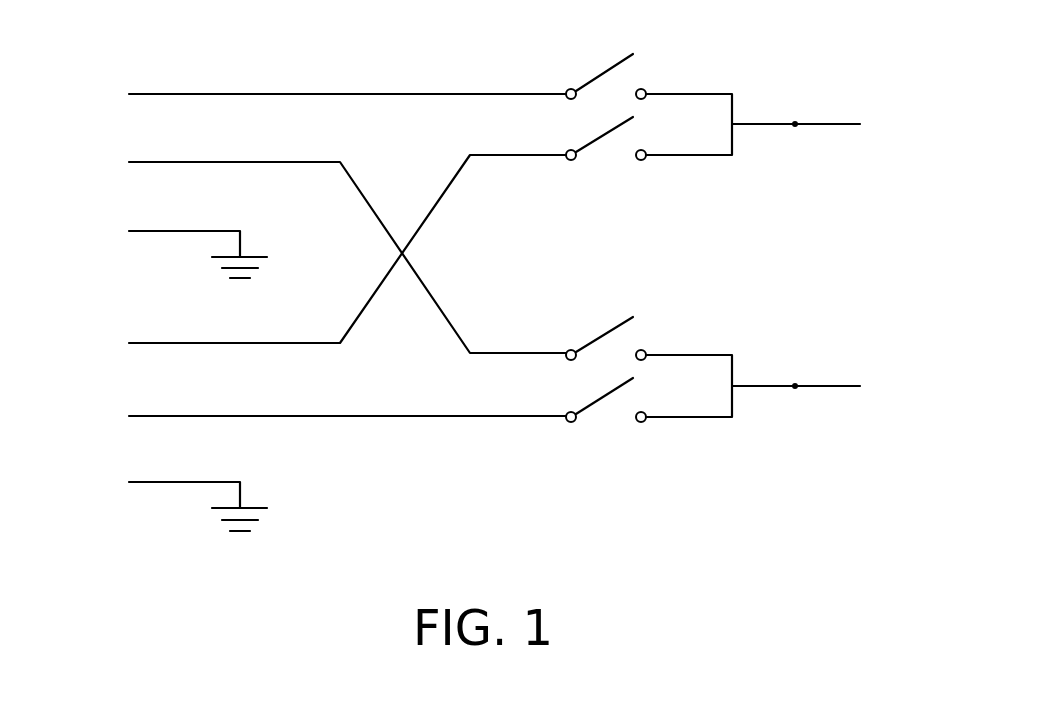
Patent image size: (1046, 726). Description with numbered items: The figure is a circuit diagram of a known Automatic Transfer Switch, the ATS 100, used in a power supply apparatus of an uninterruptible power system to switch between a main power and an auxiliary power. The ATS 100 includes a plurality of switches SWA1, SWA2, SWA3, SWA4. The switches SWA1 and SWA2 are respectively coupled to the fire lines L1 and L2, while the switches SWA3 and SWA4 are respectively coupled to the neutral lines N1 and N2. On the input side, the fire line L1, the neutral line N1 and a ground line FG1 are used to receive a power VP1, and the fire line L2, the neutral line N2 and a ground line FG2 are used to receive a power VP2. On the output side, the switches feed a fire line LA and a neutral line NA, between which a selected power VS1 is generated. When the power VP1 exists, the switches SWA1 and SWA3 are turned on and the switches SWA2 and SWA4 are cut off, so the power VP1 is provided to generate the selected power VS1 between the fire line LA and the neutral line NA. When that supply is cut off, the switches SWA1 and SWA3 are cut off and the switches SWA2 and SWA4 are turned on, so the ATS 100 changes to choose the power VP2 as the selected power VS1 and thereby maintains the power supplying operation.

The fire line L1 is at (183, 94).
The neutral line N1 is at (178, 163).
The fire line L2 is at (183, 343).
The neutral line N2 is at (178, 417).
The power VP1 is at (92, 127).
The power VP2 is at (95, 379).
The ground line FG1 is at (172, 245).
The ground line FG2 is at (163, 497).
The switch SWA1 is at (606, 51).
The switch SWA2 is at (606, 166).
The switch SWA3 is at (606, 313).
The switch SWA4 is at (606, 426).
The fire line LA is at (773, 124).
The neutral line NA is at (774, 386).
The selected power VS1 is at (795, 127).
The ATS 100 is at (869, 544).